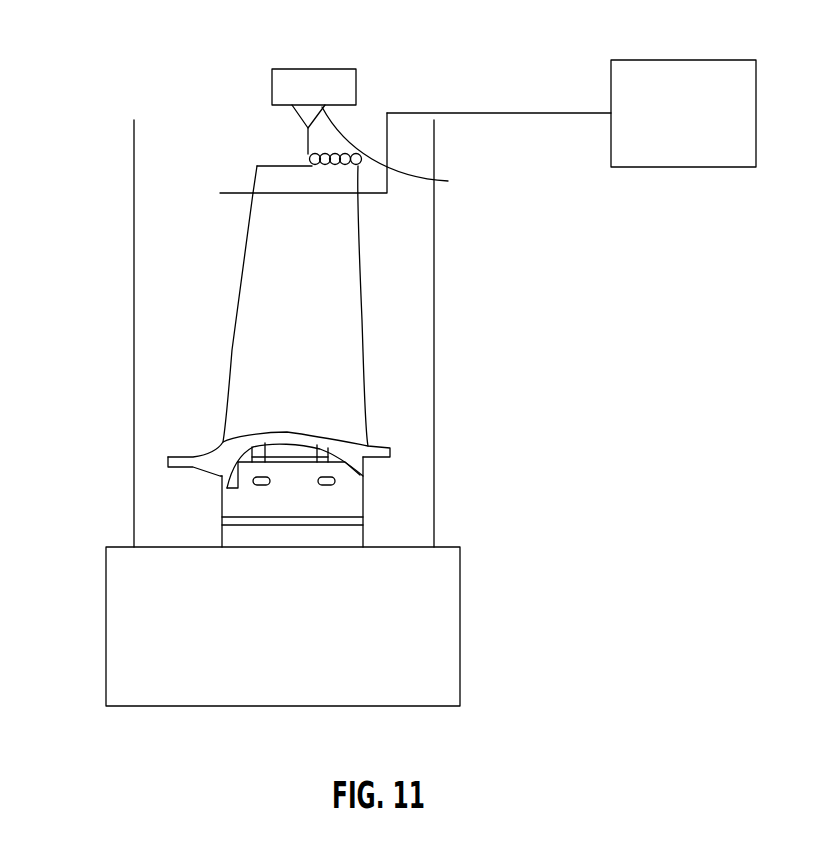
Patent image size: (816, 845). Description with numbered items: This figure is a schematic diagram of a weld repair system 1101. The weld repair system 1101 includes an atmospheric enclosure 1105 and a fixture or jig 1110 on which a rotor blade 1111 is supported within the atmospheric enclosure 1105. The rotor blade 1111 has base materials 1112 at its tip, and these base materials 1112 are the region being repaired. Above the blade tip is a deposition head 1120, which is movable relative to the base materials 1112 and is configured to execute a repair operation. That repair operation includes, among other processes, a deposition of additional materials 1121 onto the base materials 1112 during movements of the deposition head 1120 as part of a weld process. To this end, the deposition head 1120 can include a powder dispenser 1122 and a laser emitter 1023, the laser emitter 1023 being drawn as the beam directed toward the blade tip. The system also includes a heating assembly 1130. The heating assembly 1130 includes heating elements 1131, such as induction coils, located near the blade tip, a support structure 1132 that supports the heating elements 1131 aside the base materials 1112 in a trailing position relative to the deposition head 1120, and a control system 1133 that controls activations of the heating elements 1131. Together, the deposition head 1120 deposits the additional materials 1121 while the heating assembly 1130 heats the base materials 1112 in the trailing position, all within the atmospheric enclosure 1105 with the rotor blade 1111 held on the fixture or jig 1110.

The weld repair system 1101 is at (330, 312).
The atmospheric enclosure 1105 is at (133, 333).
The fixture or jig 1110 is at (125, 638).
The rotor blade 1111 is at (347, 330).
The base materials 1112 is at (283, 165).
The deposition head 1120 is at (314, 68).
The additional materials 1121 is at (335, 164).
The powder dispenser 1122 is at (308, 112).
The energy beam 1023 is at (448, 181).
The heating assembly 1130 is at (505, 90).
The heating elements 1131 is at (228, 194).
The support structure 1132 is at (543, 117).
The control system 1133 is at (683, 59).